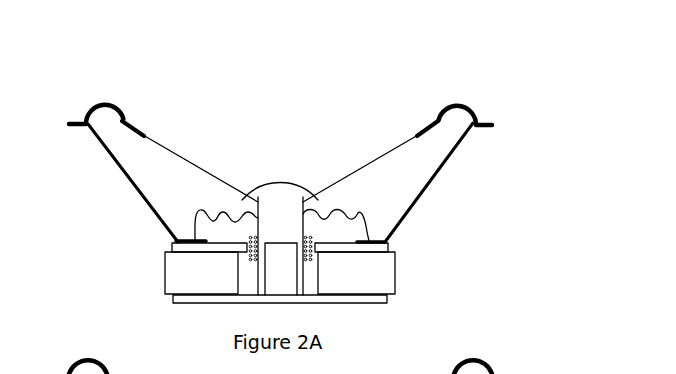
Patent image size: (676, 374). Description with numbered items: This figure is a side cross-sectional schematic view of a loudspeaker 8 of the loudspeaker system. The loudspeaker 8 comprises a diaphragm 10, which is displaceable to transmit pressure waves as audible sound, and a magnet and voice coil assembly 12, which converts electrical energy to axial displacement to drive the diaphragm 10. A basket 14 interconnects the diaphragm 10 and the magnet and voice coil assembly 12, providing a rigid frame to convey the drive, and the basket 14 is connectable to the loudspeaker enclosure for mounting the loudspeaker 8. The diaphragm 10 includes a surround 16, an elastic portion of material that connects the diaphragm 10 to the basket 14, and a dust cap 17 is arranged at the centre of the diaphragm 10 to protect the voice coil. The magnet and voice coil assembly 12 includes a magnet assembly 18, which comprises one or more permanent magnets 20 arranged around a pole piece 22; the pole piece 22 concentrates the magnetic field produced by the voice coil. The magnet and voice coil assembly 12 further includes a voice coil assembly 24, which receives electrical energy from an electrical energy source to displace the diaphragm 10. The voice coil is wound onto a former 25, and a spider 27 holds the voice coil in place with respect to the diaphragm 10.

The loudspeaker 8 is at (490, 78).
The diaphragm 10 is at (372, 163).
The magnet and voice coil assembly 12 is at (468, 300).
The basket 14 is at (132, 188).
The surround 16 is at (447, 102).
The dust cap 17 is at (280, 183).
The magnet assembly 18 is at (137, 278).
The permanent magnet 20 is at (207, 282).
The pole piece 22 is at (288, 277).
The voice coil assembly 24 is at (333, 237).
The former 25 is at (258, 228).
The spider 27 is at (362, 213).